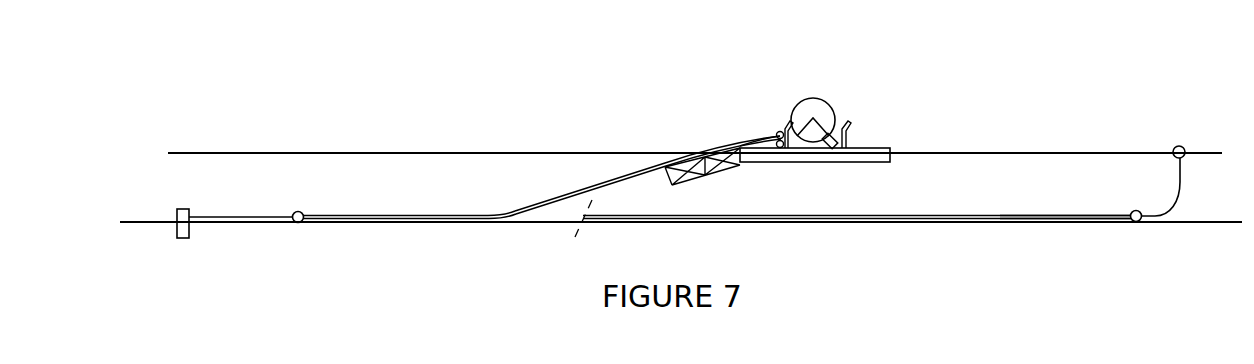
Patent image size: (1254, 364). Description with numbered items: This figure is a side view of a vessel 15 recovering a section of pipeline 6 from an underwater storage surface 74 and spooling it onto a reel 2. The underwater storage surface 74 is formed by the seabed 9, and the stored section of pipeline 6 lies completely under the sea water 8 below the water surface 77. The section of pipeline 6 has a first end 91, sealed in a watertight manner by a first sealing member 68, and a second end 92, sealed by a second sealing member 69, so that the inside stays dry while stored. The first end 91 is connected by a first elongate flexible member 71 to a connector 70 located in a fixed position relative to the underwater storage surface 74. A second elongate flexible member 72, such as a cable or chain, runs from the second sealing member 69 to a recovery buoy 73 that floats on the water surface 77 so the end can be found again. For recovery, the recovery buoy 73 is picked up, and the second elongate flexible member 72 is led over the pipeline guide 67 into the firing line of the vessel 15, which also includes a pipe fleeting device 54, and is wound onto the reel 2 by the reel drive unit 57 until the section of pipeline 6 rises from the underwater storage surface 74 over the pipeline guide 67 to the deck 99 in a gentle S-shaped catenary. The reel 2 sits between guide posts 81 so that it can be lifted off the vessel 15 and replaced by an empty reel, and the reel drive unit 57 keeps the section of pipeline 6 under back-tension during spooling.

The reel 2 is at (814, 93).
The section of pipeline 6 is at (619, 174).
The sea water 8 is at (326, 180).
The seabed 9 is at (138, 219).
The vessel 15 is at (877, 144).
The pipe fleeting device 54 is at (775, 124).
The reel drive unit 57 is at (834, 152).
The pipeline guide 67 is at (707, 147).
The first sealing member 68 is at (302, 225).
The second sealing member 69 is at (1139, 223).
The connector 70 is at (185, 207).
The first elongate flexible member 71 is at (239, 214).
The second elongate flexible member 72 is at (1171, 198).
The recovery buoy 73 is at (1184, 145).
The underwater storage surface 74 is at (1198, 219).
The water surface 77 is at (1209, 150).
The guide posts 81 is at (786, 118).
The first end 91 is at (314, 222).
The second end 92 is at (1126, 221).
The deck 99 is at (762, 137).